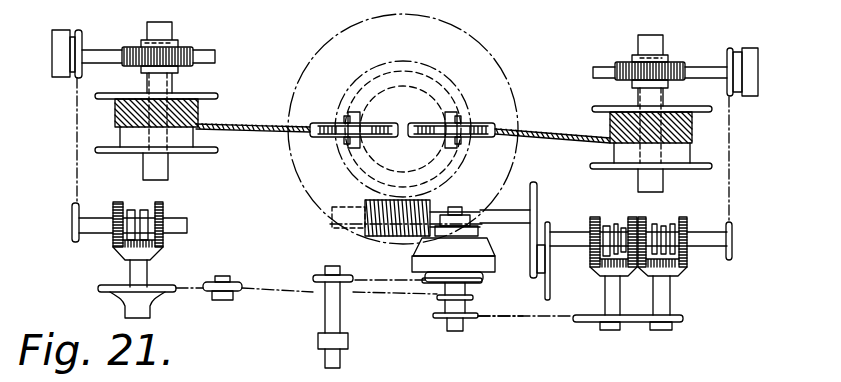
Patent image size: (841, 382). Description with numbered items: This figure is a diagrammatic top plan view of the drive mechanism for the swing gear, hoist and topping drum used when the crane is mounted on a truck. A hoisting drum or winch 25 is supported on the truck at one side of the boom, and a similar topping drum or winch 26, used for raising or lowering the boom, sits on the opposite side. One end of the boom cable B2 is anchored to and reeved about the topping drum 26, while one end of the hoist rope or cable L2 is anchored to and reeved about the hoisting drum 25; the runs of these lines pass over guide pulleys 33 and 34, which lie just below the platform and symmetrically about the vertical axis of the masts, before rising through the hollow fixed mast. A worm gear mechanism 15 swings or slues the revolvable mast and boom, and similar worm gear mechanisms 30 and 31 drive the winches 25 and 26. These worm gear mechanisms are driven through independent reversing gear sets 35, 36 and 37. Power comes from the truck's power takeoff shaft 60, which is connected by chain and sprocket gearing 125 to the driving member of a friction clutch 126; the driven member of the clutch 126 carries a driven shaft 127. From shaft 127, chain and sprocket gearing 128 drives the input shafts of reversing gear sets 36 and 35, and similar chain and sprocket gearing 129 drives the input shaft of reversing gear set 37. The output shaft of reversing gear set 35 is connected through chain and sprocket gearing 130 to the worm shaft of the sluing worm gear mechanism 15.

The worm gear mechanism 15 is at (352, 196).
The guide pulley 33 is at (377, 122).
The guide pulley 34 is at (422, 128).
The boom cable B2 is at (236, 130).
The hoist rope or cable L2 is at (547, 133).
The worm gear mechanism 31 is at (190, 50).
The topping drum or winch 26 is at (206, 95).
The reversing gear set 37 is at (167, 222).
The chain and sprocket gearing 129 is at (262, 291).
The power takeoff shaft 60 is at (341, 328).
The friction clutch 126 is at (487, 270).
The chain and sprocket gearing 125 is at (398, 280).
The driven shaft 127 is at (453, 332).
The chain and sprocket gearing 128 is at (510, 317).
The chain and sprocket gearing 130 is at (550, 270).
The reversing gear set 35 is at (600, 220).
The reversing gear set 36 is at (685, 218).
The worm gear mechanism 30 is at (677, 65).
The hoisting drum or winch 25 is at (603, 106).